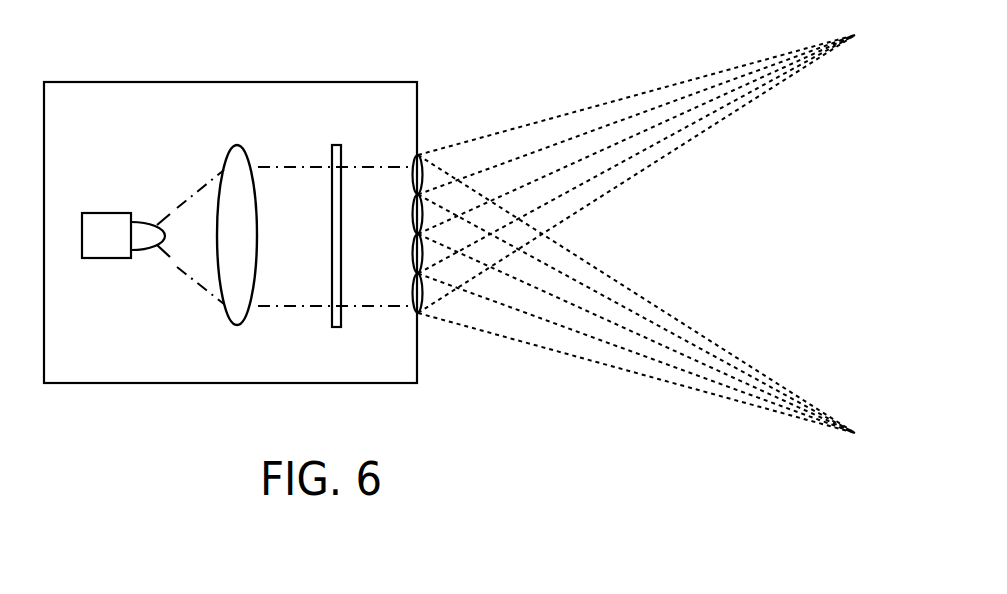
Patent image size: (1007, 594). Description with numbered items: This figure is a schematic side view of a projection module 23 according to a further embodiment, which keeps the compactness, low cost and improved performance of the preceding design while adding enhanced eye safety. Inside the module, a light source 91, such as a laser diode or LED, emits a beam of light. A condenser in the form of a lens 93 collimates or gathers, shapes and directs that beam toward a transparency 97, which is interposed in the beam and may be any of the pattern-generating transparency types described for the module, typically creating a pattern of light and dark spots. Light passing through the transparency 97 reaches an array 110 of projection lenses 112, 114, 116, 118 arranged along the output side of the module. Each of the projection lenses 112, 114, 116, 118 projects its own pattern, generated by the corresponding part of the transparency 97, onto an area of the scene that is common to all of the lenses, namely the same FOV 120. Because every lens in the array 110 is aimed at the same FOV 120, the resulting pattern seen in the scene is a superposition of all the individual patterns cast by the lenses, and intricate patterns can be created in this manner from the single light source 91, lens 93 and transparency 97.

The projection module 23 is at (98, 82).
The light source 91 is at (103, 213).
The lens 93 is at (233, 147).
The transparency 97 is at (336, 145).
The array 110 is at (423, 239).
The projection lens 112 is at (418, 160).
The projection lens 114 is at (414, 213).
The projection lens 116 is at (414, 252).
The projection lens 118 is at (414, 291).
The FOV 120 is at (710, 257).